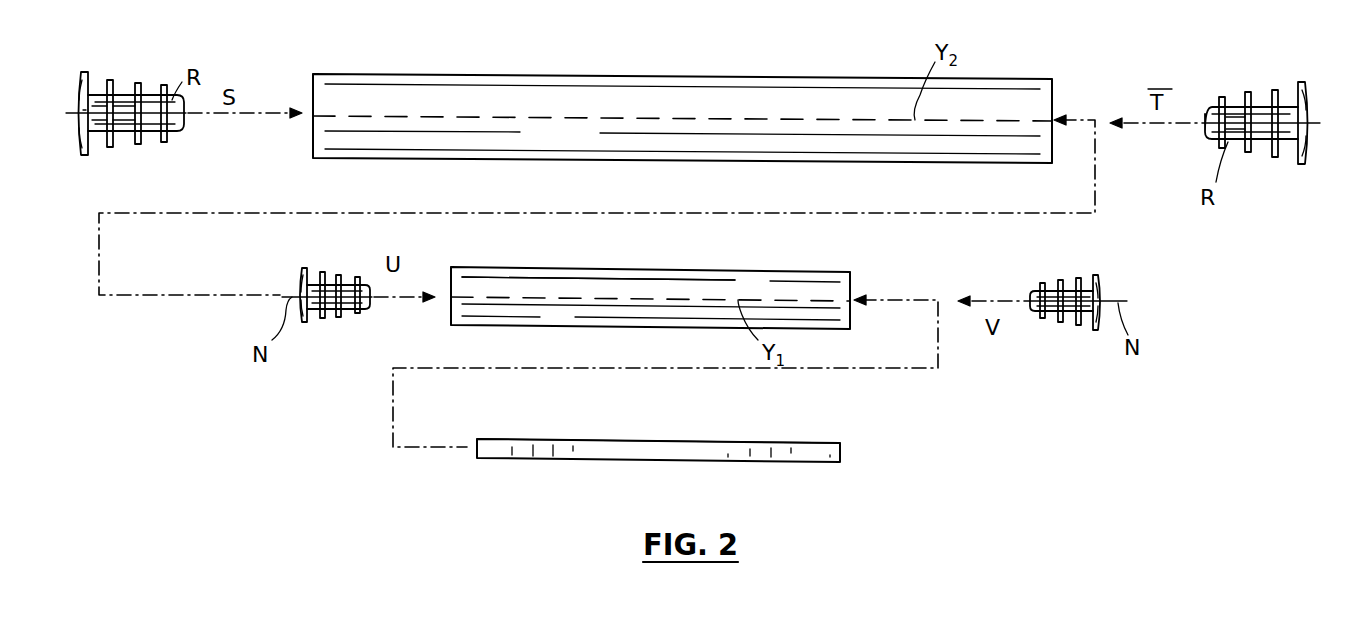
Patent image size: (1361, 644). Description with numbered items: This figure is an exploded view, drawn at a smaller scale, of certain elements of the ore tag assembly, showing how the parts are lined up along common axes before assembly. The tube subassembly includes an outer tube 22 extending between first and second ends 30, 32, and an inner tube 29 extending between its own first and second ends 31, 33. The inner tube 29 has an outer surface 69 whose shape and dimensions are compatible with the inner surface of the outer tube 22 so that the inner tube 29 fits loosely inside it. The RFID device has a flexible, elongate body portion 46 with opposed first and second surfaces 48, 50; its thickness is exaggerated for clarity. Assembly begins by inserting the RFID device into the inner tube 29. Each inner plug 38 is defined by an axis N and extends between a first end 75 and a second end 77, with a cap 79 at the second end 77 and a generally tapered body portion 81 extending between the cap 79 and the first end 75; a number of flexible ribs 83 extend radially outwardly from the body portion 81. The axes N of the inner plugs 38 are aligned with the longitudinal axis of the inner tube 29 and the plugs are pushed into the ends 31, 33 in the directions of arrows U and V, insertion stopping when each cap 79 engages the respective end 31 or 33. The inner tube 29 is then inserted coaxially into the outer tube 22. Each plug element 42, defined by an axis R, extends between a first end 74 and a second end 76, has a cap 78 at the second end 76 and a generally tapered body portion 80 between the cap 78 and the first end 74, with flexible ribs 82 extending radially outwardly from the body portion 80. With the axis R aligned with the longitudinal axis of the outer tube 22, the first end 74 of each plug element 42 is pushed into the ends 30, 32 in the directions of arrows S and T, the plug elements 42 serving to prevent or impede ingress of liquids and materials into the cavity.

The outer tube 22 is at (578, 95).
The inner tube 29 is at (667, 285).
The first end of the outer tube 30 is at (313, 82).
The first end of the inner tube 31 is at (451, 270).
The second end of the outer tube 32 is at (1053, 88).
The second end of the inner tube 33 is at (851, 272).
The inner plug 38 is at (333, 315).
The plug element 42 is at (122, 88).
The body portion 46 is at (812, 452).
The first surface 48 is at (592, 440).
The second surface 50 is at (577, 462).
The outer surface of the inner tube 69 is at (555, 266).
The first end of the plug element 74 is at (186, 125).
The first end of the inner plug 75 is at (1030, 293).
The second end of the plug element 76 is at (1296, 160).
The second end of the inner plug 77 is at (306, 268).
The cap 78 is at (85, 72).
The cap 79 is at (1099, 275).
The body portion 80 is at (148, 90).
The body portion 81 is at (1043, 320).
The flexible ribs 82 is at (140, 147).
The flexible ribs 83 is at (1079, 327).